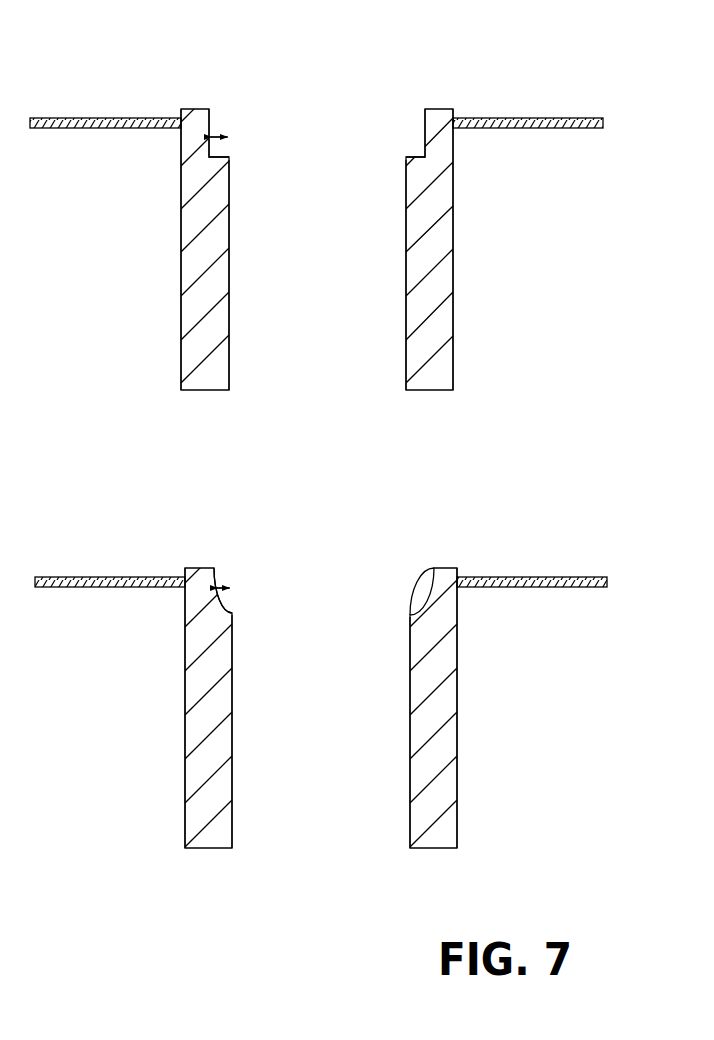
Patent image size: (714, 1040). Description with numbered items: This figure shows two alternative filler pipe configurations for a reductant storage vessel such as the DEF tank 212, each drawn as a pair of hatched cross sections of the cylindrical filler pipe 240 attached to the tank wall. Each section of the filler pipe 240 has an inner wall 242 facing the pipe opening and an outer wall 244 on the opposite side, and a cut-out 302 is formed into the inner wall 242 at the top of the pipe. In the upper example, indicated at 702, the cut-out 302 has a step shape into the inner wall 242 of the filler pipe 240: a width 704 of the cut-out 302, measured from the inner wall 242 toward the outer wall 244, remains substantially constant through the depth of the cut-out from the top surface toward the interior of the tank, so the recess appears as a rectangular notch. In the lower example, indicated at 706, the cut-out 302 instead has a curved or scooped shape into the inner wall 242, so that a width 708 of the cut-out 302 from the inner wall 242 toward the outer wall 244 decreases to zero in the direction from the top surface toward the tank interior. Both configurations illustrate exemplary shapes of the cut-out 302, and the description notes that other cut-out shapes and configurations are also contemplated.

The step-shaped cut-out example 702 is at (46, 61).
The curved cut-out example 706 is at (76, 529).
The DEF tank 212 is at (66, 117).
The filler pipe 240 is at (200, 344).
The inner wall 242 is at (229, 280).
The outer wall 244 is at (181, 268).
The cut-out 302 is at (218, 127).
The width of cut-out 704 is at (215, 139).
The width of cut-out 708 is at (224, 592).